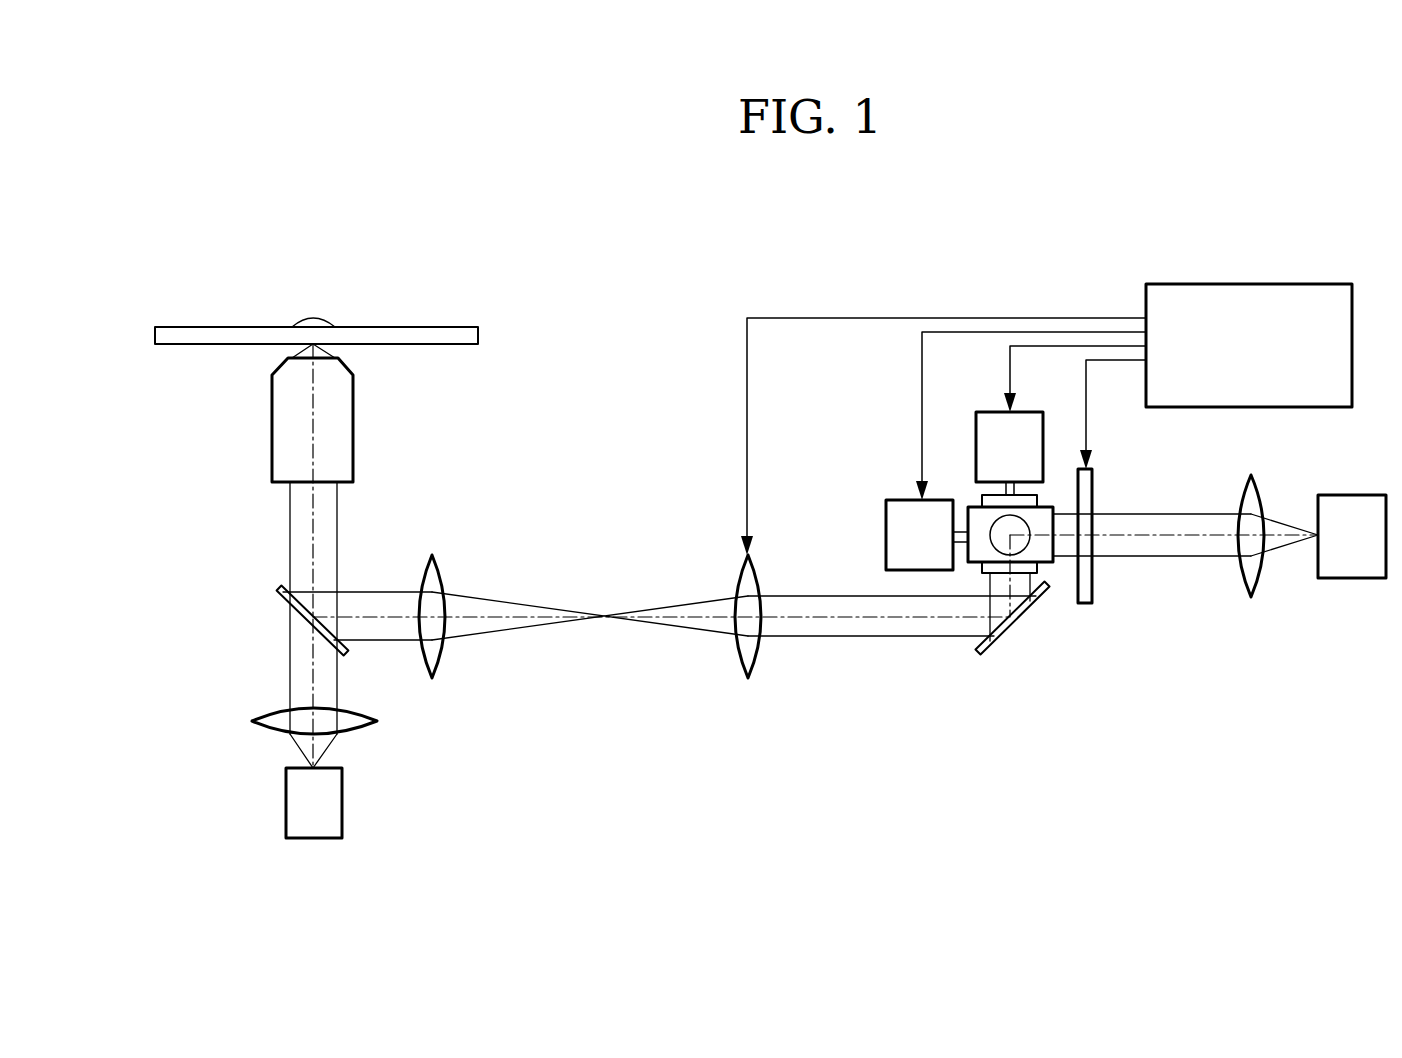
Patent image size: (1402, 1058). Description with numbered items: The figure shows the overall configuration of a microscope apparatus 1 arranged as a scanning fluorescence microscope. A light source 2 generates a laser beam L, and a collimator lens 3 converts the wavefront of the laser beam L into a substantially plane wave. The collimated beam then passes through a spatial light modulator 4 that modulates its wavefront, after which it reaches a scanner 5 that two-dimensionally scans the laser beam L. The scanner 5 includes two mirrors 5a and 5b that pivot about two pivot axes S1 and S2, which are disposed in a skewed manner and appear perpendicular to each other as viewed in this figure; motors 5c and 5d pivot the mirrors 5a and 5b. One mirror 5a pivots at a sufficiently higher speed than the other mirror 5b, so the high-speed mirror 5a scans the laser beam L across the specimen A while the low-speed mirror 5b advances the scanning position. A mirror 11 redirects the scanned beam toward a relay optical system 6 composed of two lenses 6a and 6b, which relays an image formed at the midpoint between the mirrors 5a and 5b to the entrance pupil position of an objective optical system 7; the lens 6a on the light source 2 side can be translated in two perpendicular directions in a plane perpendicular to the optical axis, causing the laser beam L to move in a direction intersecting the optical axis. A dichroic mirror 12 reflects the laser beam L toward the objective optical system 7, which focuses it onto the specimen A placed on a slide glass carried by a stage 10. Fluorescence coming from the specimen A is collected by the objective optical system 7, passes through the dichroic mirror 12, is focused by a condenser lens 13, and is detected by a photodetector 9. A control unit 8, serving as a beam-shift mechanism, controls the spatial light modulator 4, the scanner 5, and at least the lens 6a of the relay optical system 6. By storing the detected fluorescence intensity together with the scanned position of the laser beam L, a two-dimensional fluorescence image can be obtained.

The microscope apparatus 1 is at (608, 268).
The light source 2 is at (1351, 579).
The collimator lens 3 is at (1251, 599).
The spatial light modulator 4 is at (1093, 595).
The scanner 5 is at (931, 524).
The mirror 5a is at (1042, 573).
The mirror 5b is at (971, 566).
The motor 5c is at (1023, 412).
The motor 5d is at (886, 532).
The relay optical system 6 is at (589, 636).
The lens 6a is at (724, 599).
The lens 6b is at (444, 574).
The objective optical system 7 is at (353, 424).
The control unit 8 is at (1240, 284).
The photodetector 9 is at (286, 795).
The stage 10 is at (450, 327).
The mirror 11 is at (998, 643).
The dichroic mirror 12 is at (278, 588).
The condenser lens 13 is at (252, 721).
The specimen A is at (319, 326).
The laser beam L is at (1164, 558).
The pivot axis S1 is at (1029, 488).
The pivot axis S2 is at (960, 529).